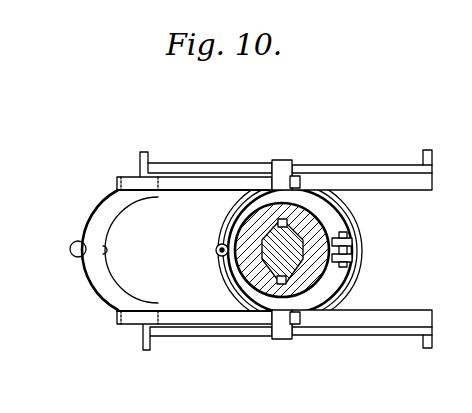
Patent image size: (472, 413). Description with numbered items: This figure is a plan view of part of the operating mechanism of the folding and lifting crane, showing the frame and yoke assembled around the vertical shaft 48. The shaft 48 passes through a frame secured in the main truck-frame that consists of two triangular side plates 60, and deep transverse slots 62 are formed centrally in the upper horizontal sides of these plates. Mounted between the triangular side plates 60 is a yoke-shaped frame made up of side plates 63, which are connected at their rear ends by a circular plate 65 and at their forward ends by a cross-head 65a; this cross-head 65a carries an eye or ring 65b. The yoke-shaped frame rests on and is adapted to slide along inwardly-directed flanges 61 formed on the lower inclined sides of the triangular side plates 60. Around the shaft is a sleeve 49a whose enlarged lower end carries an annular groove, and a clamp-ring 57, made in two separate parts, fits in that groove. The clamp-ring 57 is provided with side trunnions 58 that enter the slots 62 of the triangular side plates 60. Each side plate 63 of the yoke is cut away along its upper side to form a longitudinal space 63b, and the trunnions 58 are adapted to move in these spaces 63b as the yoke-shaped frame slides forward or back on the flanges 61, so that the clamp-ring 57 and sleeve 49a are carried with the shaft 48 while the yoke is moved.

The vertical shaft 48 is at (262, 246).
The sleeve 49a is at (298, 270).
The clamp-ring 57 is at (240, 211).
The side trunnions 58 is at (290, 161).
The triangular side plates 60 is at (225, 164).
The inwardly-directed flanges 61 is at (384, 189).
The transverse slots 62 is at (272, 180).
The side plates 63 is at (130, 175).
The longitudinal space 63b is at (186, 183).
The circular plate 65 is at (363, 249).
The cross-head 65a is at (90, 221).
The eye or ring 65b is at (72, 257).